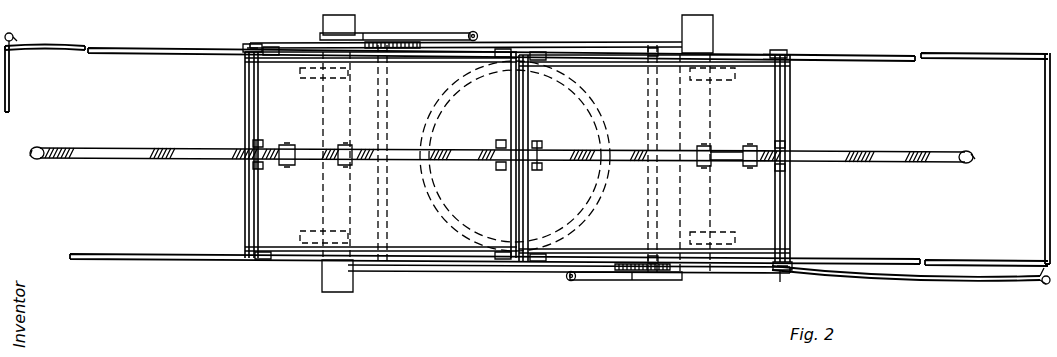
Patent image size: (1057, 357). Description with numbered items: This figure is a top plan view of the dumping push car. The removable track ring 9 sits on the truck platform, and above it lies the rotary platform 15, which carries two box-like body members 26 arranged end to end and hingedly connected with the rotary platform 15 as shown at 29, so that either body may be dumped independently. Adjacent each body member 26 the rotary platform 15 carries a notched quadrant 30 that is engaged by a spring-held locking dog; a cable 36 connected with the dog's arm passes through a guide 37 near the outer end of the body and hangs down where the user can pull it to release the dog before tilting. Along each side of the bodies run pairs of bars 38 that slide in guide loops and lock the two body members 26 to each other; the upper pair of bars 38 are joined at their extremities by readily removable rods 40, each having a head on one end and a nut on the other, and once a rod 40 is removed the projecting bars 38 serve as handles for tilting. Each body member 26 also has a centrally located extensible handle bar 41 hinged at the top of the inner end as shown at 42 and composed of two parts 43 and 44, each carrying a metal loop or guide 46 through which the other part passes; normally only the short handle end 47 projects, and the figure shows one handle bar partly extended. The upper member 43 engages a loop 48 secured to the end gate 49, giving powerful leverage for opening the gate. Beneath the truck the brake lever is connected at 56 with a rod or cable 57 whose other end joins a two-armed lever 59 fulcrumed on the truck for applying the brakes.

The track ring 9 is at (450, 100).
The rotary platform 15 is at (455, 267).
The body members 26 is at (517, 155).
The hinge connection 29 is at (387, 209).
The notched quadrant 30 is at (405, 42).
The cable 36 is at (62, 45).
The guide 37 is at (253, 43).
The bars 38 is at (868, 61).
The rods 40 is at (8, 87).
The extensible handle bar 41 is at (726, 168).
The hinge connection of handle bar 42 is at (536, 147).
The upper member of handle bar 43 is at (122, 156).
The lower member of handle bar 44 is at (402, 150).
The metal loop or guide 46 is at (295, 181).
The short handle end 47 is at (38, 160).
The loop 48 is at (248, 167).
The end gate 49 is at (253, 92).
The connection of lever to rod or cable 56 is at (478, 33).
The rod or cable 57 is at (440, 31).
The lever 59 is at (327, 33).